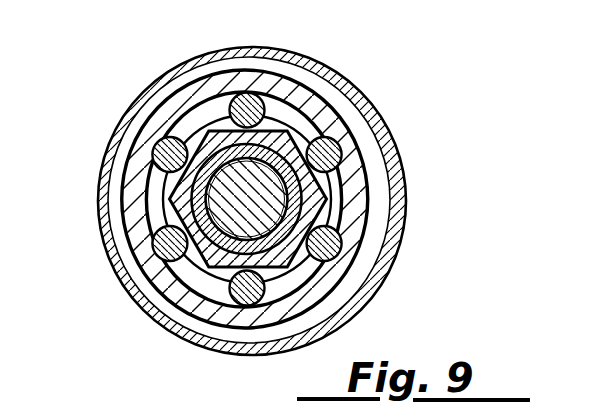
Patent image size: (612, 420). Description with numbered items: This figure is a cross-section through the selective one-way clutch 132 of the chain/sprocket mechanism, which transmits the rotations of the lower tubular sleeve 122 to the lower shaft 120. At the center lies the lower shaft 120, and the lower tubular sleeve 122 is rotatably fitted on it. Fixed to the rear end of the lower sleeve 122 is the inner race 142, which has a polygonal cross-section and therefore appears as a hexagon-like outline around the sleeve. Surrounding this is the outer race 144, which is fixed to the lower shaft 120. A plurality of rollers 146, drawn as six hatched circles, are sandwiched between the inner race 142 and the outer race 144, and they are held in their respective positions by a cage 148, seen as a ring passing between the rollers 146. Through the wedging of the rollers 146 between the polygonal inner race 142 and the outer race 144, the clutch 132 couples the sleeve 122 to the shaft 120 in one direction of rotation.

The lower shaft 120 is at (270, 208).
The lower tubular sleeve 122 is at (265, 148).
The selective one-way clutch 132 is at (159, 76).
The inner race 142 is at (293, 134).
The outer race 144 is at (256, 94).
The rollers 146 is at (334, 157).
The cage 148 is at (343, 194).